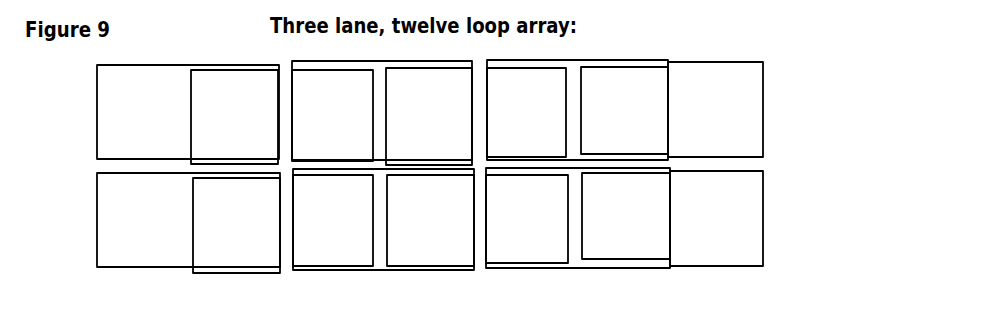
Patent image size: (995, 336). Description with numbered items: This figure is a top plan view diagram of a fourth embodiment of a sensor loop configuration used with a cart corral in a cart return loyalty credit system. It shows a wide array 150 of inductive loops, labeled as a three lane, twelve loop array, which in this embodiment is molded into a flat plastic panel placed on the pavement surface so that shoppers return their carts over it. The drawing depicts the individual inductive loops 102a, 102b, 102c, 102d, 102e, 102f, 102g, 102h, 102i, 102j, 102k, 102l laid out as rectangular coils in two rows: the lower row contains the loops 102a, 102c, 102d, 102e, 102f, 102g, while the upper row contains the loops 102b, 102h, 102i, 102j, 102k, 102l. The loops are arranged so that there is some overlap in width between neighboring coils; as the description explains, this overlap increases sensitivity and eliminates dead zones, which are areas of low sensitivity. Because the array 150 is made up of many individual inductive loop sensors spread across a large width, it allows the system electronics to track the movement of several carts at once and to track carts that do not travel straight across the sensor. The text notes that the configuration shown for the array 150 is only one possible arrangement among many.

The wide array 150 is at (902, 135).
The inductive loop 102a is at (98, 229).
The inductive loop 102b is at (97, 133).
The inductive loop 102c is at (285, 273).
The inductive loop 102d is at (380, 267).
The inductive loop 102e is at (482, 270).
The inductive loop 102f is at (575, 262).
The inductive loop 102g is at (692, 267).
The inductive loop 102h is at (287, 62).
The inductive loop 102i is at (382, 62).
The inductive loop 102j is at (478, 63).
The inductive loop 102k is at (573, 58).
The inductive loop 102l is at (685, 62).